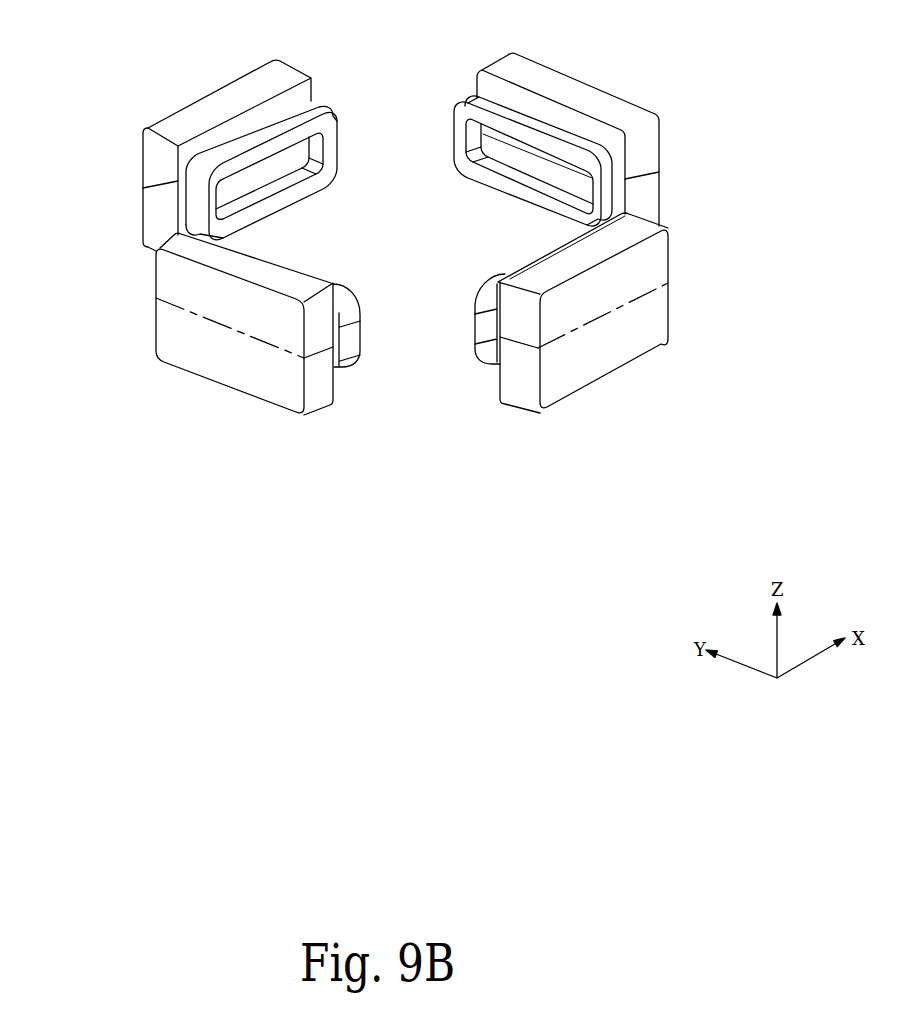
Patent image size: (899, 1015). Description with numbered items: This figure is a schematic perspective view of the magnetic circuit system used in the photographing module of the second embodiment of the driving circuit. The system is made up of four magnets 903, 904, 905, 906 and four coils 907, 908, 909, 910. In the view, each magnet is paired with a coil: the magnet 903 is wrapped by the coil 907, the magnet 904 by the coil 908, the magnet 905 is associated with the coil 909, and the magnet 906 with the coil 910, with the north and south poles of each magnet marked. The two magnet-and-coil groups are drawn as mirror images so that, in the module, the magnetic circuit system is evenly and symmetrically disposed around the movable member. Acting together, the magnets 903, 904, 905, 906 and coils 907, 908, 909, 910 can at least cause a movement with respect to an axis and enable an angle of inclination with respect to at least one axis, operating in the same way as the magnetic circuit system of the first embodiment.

The magnet 903 is at (165, 161).
The magnet 904 is at (605, 107).
The magnet 905 is at (609, 243).
The magnet 906 is at (334, 371).
The coil 907 is at (267, 127).
The coil 908 is at (496, 109).
The coil 909 is at (488, 336).
The coil 910 is at (352, 345).